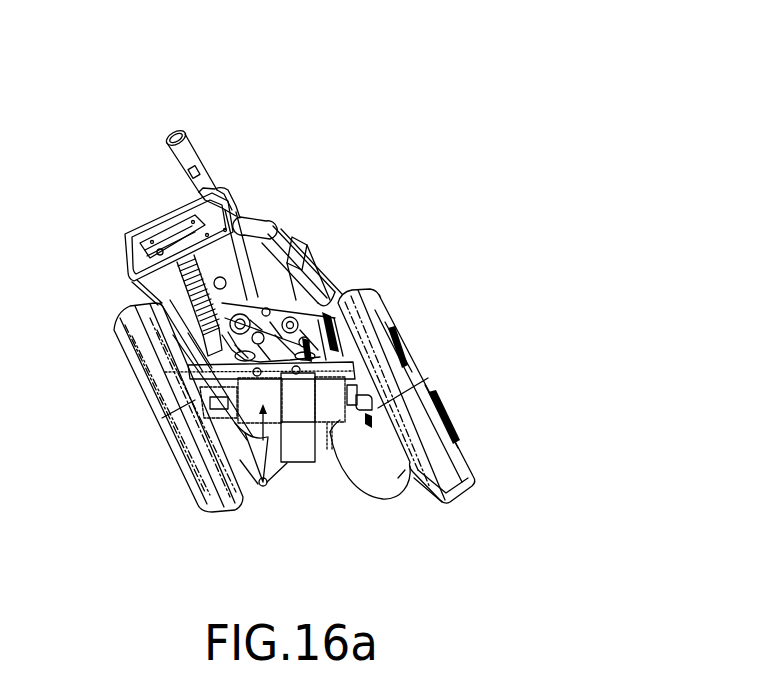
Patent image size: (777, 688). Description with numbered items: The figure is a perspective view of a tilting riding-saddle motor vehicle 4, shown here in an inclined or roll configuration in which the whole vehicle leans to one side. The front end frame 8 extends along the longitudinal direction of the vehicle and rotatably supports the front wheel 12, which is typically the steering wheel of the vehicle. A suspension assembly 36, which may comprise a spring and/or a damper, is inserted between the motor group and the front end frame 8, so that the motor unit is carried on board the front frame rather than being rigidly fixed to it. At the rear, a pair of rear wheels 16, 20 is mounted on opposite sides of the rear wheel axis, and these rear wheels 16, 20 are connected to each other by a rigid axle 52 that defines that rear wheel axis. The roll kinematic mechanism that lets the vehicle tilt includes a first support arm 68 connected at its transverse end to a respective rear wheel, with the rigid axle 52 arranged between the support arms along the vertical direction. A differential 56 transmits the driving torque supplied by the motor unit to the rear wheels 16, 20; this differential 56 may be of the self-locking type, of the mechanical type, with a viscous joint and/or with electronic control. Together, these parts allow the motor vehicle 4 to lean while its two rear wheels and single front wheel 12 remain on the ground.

The riding-saddle motor vehicle 4 is at (381, 70).
The front end frame 8 is at (248, 225).
The suspension assembly 36 is at (166, 252).
The first support arm 68 is at (320, 322).
The rear wheel 20 is at (373, 312).
The rear wheel 16 is at (205, 466).
The differential 56 is at (263, 482).
The front wheel 12 is at (384, 490).
The rigid axle 52 is at (452, 484).